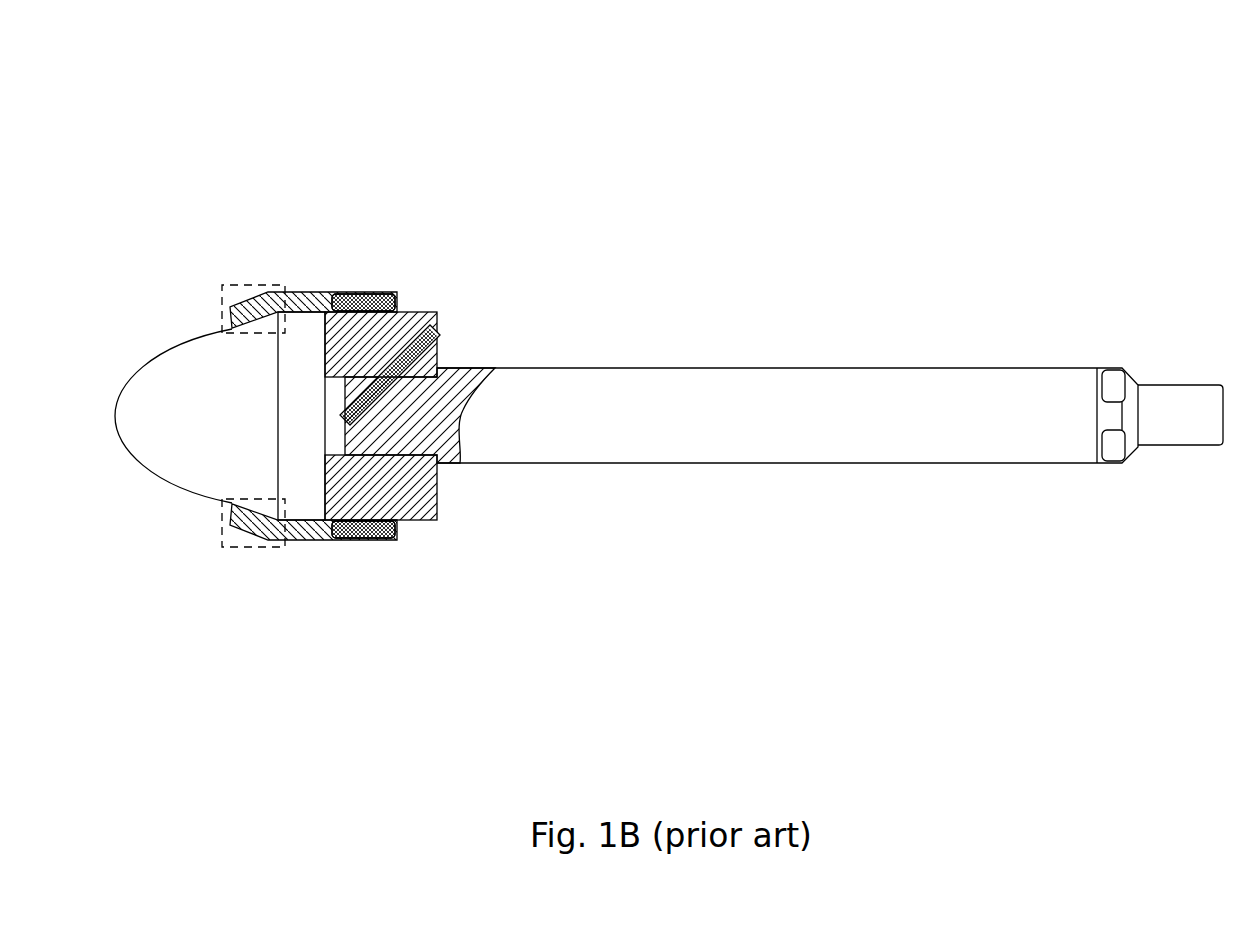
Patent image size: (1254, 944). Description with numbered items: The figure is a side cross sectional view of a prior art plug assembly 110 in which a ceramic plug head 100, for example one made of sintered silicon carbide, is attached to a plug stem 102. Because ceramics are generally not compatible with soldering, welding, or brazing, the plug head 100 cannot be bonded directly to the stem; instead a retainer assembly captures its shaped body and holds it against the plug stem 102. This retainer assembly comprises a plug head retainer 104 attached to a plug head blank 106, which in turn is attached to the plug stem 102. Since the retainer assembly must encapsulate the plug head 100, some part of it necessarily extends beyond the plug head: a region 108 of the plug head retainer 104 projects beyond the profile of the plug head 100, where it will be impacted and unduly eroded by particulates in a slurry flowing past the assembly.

The ceramic plug head 100 is at (229, 426).
The plug stem 102 is at (663, 434).
The plug head retainer 104 is at (310, 291).
The plug head blank 106 is at (418, 312).
The region of the plug head retainer 108 is at (236, 284).
The plug assembly 110 is at (412, 138).